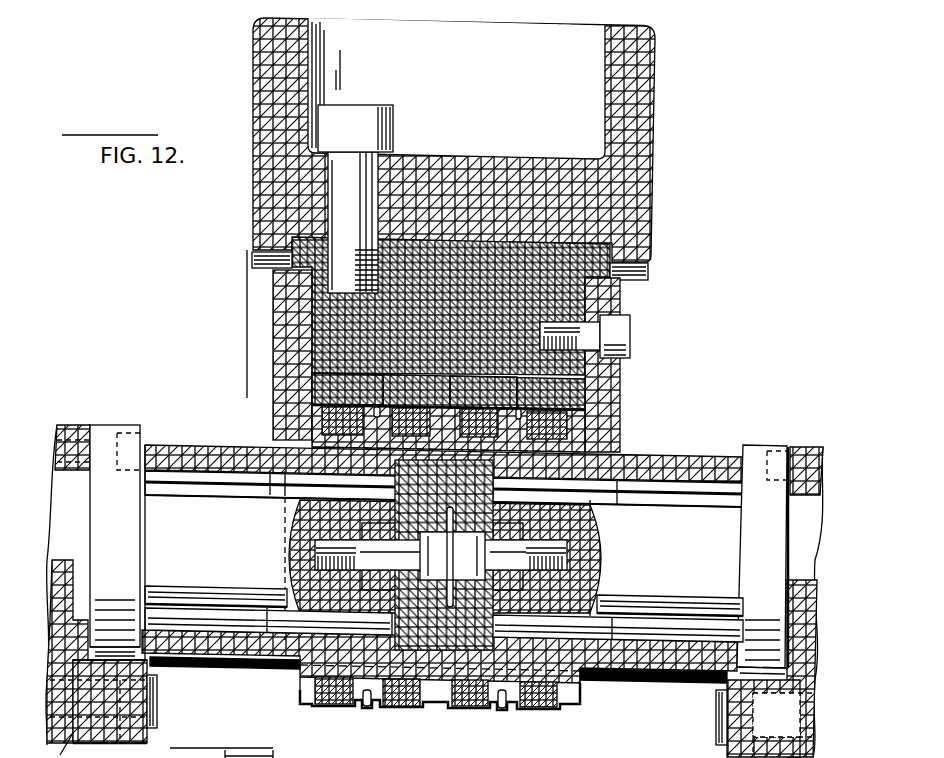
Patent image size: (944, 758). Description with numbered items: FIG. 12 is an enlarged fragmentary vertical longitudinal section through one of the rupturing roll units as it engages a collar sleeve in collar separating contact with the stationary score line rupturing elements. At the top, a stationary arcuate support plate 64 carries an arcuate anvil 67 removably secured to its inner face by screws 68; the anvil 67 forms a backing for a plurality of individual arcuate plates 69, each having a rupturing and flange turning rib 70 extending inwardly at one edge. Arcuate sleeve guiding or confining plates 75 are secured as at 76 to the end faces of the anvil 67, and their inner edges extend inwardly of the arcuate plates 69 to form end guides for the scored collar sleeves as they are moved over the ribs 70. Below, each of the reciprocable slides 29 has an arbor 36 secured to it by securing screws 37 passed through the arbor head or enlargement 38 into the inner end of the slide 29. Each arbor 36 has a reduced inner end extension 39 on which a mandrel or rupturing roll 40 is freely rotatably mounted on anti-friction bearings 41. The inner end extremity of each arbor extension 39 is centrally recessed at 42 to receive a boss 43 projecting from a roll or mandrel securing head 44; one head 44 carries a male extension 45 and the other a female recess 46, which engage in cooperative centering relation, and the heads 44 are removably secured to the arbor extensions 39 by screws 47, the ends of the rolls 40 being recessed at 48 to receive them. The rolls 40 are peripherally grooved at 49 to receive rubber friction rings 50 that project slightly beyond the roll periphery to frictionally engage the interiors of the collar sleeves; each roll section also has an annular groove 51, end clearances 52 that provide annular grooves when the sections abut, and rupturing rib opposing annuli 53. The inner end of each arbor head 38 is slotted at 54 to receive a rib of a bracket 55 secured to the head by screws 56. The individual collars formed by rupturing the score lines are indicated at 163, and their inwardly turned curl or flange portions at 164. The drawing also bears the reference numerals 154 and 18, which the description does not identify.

The arcuate support plate 64 is at (623, 188).
The arcuate anvil 67 is at (587, 247).
The screws 68 is at (392, 108).
The arcuate sleeve guiding or confining plates 75 is at (280, 392).
The securing means 76 is at (628, 330).
The arcuate plates 69 is at (413, 398).
The individual collars 163 is at (340, 404).
The rupturing and flange turning rib 70 is at (378, 407).
The rupturing roll 40 is at (577, 436).
The arbor extension 39 is at (213, 458).
The inwardly turned curl or flange portions 164 is at (444, 489).
The anti-friction bearings 41 is at (243, 487).
The arbor 36 is at (78, 552).
The reciprocable slides 29 is at (83, 427).
The arbor head 38 is at (97, 505).
The securing screws 37 is at (105, 445).
The central recess 42 is at (285, 577).
The boss 43 is at (300, 527).
The female recess 46 is at (490, 630).
The roll or mandrel securing head 44 is at (400, 480).
The screws 47 is at (287, 550).
The male extension 45 is at (474, 528).
The roll end recesses 48 is at (412, 682).
The friction rings 50 is at (317, 703).
The annular groove 51 is at (363, 707).
The rupturing rib opposing annuli 53 is at (372, 708).
The end clearances 52 is at (438, 710).
The peripheral grooves 49 is at (307, 688).
The bracket 55 is at (157, 710).
The screws 56 is at (157, 683).
The slot 54 is at (59, 745).
The frame member 154 is at (192, 751).
The base 18 is at (285, 751).